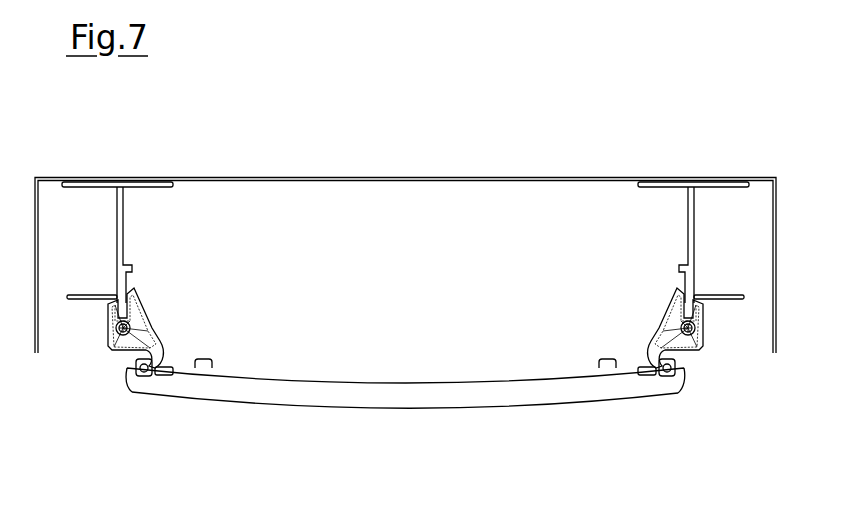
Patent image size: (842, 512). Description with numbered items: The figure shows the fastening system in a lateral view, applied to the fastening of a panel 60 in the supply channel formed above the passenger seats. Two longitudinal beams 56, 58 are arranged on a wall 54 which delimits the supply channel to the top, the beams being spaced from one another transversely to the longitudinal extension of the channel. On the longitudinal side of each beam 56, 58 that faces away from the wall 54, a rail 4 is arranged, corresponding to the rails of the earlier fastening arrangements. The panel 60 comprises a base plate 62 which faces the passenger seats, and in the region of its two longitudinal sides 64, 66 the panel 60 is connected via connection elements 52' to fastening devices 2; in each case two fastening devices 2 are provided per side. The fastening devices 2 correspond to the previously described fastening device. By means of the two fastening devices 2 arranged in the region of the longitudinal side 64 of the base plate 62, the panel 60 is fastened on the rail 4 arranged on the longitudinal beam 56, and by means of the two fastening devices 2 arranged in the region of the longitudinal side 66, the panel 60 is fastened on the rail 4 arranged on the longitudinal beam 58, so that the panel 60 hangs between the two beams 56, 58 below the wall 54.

The fastening device 2 is at (703, 336).
The rail 4 is at (124, 296).
The connection element 52' is at (378, 304).
The wall 54 is at (368, 178).
The longitudinal beam 56 is at (121, 237).
The longitudinal beam 58 is at (694, 218).
The panel 60 is at (178, 400).
The base plate 62 is at (380, 398).
The longitudinal side 64 is at (128, 378).
The longitudinal side 66 is at (685, 372).